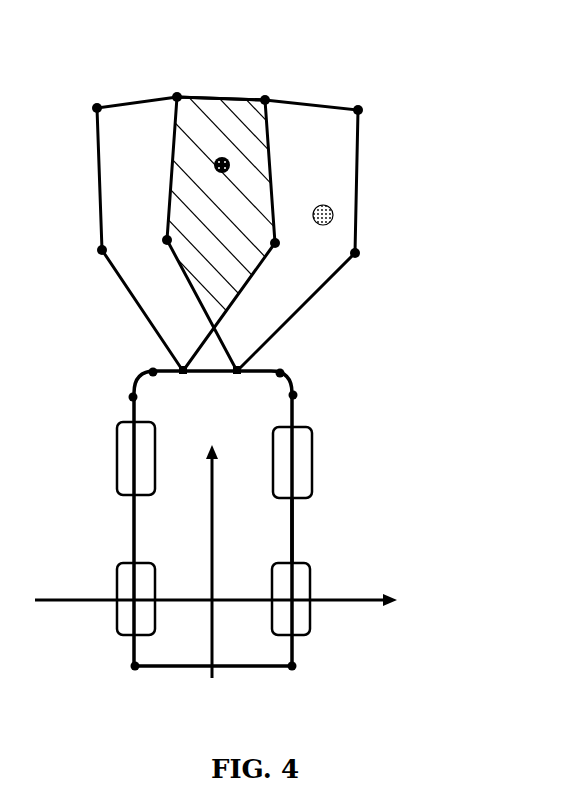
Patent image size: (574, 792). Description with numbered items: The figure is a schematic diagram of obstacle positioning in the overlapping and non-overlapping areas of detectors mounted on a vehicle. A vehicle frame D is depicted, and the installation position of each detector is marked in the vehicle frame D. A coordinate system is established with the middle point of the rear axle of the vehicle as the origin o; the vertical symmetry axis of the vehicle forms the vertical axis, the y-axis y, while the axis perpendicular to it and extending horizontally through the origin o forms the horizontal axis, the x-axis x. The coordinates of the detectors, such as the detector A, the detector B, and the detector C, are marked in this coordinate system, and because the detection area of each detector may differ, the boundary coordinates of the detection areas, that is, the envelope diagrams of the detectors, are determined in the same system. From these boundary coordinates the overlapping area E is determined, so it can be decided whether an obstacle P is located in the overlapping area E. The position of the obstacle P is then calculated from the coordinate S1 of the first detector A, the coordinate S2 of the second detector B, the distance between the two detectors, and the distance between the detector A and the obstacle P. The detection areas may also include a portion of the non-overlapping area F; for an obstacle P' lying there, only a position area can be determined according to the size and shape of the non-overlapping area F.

The obstacle P is at (259, 104).
The obstacle point outside overlap region P' is at (374, 177).
The overlapping area E is at (273, 210).
The non-overlapping area F is at (279, 214).
The first detector A is at (327, 339).
The second detector B is at (113, 342).
The detector C is at (295, 397).
The vehicle frame D is at (260, 528).
The coordinate of the first detector S1 is at (242, 382).
The coordinate of the second detector S2 is at (190, 382).
The x-axis x is at (411, 607).
The y-axis y is at (223, 432).
The origin o is at (216, 561).